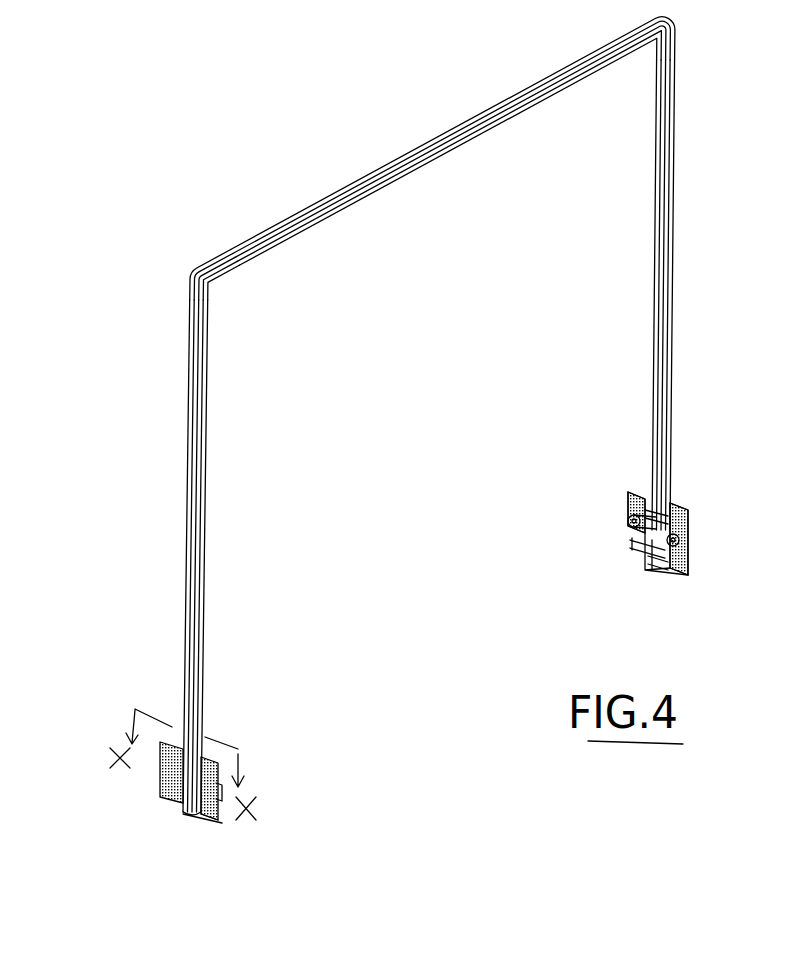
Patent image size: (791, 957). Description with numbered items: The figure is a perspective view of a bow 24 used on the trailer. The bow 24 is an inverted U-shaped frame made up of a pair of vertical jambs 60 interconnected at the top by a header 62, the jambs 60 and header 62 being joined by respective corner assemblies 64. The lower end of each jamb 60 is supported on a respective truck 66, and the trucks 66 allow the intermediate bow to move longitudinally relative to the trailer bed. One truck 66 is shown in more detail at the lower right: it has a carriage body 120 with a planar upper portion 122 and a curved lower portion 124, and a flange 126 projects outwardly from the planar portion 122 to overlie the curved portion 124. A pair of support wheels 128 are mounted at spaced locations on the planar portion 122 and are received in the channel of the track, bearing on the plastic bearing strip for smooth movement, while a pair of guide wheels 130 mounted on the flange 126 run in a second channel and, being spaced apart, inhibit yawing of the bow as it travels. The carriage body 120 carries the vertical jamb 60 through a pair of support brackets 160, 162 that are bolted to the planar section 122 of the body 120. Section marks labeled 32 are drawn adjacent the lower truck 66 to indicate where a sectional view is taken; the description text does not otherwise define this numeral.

The bow 24 is at (141, 509).
The base member 32 is at (225, 763).
The vertical jambs 60 is at (205, 516).
The header 62 is at (373, 195).
The corner assemblies 64 is at (185, 274).
The trucks 66 is at (163, 694).
The carriage body 120 is at (627, 504).
The planar upper portion 122 is at (685, 545).
The curved lower portion 124 is at (668, 572).
The flange 126 is at (637, 558).
The support wheels 128 is at (630, 523).
The guide wheels 130 is at (668, 567).
The support bracket 160 is at (645, 490).
The support bracket 162 is at (672, 508).